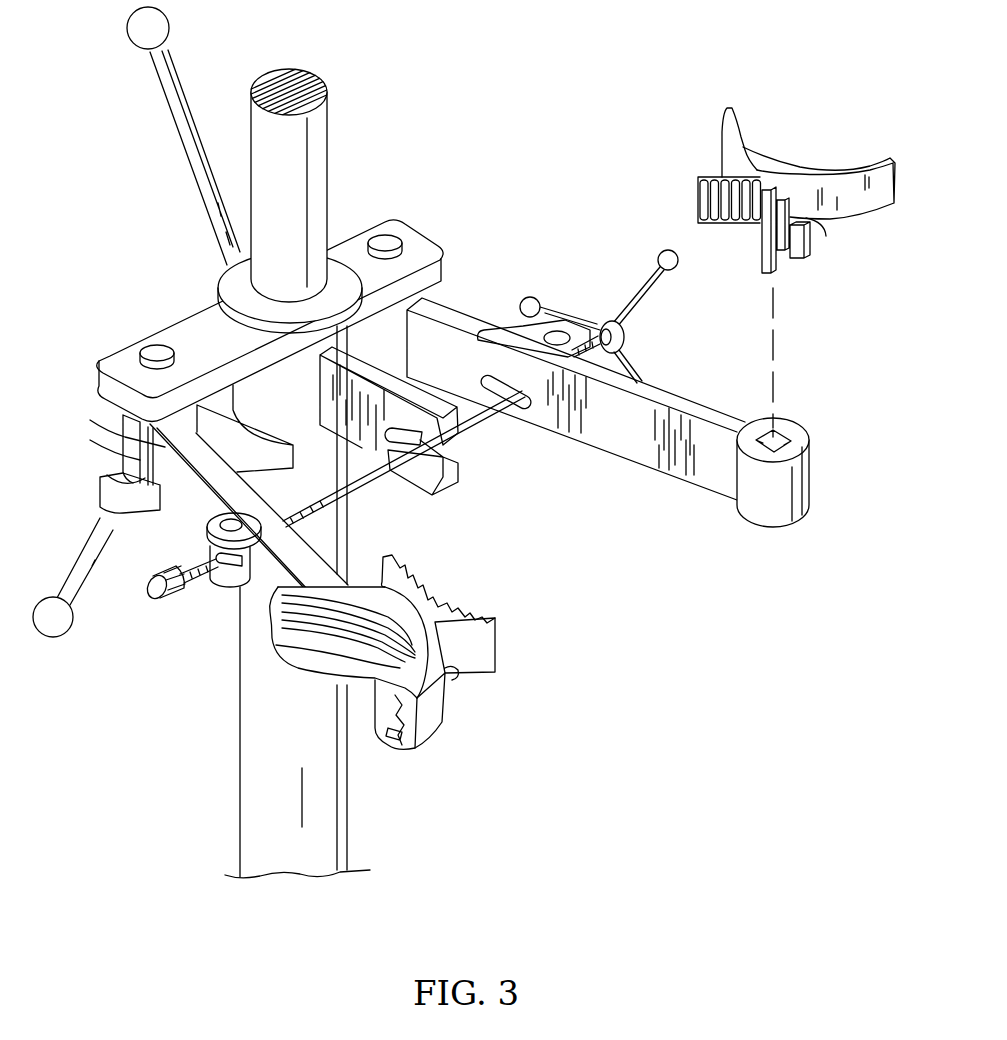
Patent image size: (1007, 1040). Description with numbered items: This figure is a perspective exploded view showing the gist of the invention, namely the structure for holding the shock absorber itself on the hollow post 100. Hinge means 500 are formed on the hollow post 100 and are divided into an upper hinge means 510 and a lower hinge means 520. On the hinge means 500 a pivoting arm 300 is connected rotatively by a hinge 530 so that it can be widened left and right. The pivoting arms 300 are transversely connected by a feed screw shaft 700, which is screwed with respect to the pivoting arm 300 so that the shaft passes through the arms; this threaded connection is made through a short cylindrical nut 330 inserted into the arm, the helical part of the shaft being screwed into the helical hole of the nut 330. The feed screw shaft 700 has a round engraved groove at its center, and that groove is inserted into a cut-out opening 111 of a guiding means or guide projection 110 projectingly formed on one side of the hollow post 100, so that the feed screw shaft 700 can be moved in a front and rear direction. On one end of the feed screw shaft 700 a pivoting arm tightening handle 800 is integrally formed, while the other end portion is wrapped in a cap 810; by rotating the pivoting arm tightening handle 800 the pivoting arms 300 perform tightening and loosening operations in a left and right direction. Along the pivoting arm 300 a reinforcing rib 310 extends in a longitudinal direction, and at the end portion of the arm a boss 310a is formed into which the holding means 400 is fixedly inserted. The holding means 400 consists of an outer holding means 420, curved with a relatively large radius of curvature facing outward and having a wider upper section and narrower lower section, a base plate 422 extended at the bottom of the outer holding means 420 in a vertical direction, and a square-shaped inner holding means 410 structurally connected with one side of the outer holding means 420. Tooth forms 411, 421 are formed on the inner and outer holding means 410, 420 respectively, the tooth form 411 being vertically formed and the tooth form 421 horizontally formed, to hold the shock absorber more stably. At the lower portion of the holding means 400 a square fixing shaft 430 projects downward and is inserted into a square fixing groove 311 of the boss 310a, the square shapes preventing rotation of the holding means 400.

The hollow post 100 is at (250, 128).
The guide projection 110 is at (412, 394).
The cut-out opening 111 is at (460, 453).
The pivoting arm 300 is at (506, 406).
The reinforcing rib 310 is at (148, 442).
The boss 310a is at (770, 515).
The fixing groove 311 is at (786, 440).
The nut 330 is at (128, 483).
The holding means 400 is at (538, 416).
The inner holding means 410 is at (697, 170).
The tooth form 411 is at (280, 626).
The outer holding means 420 is at (843, 160).
The tooth form 421 is at (465, 600).
The base plate 422 is at (312, 652).
The fixing shaft 430 is at (778, 277).
The hinge means 500 is at (270, 214).
The upper hinge means 510 is at (410, 237).
The lower hinge means 520 is at (105, 500).
The hinge 530 is at (380, 238).
The feed screw shaft 700 is at (122, 388).
The pivoting arm tightening handle 800 is at (668, 250).
The cap 810 is at (157, 599).